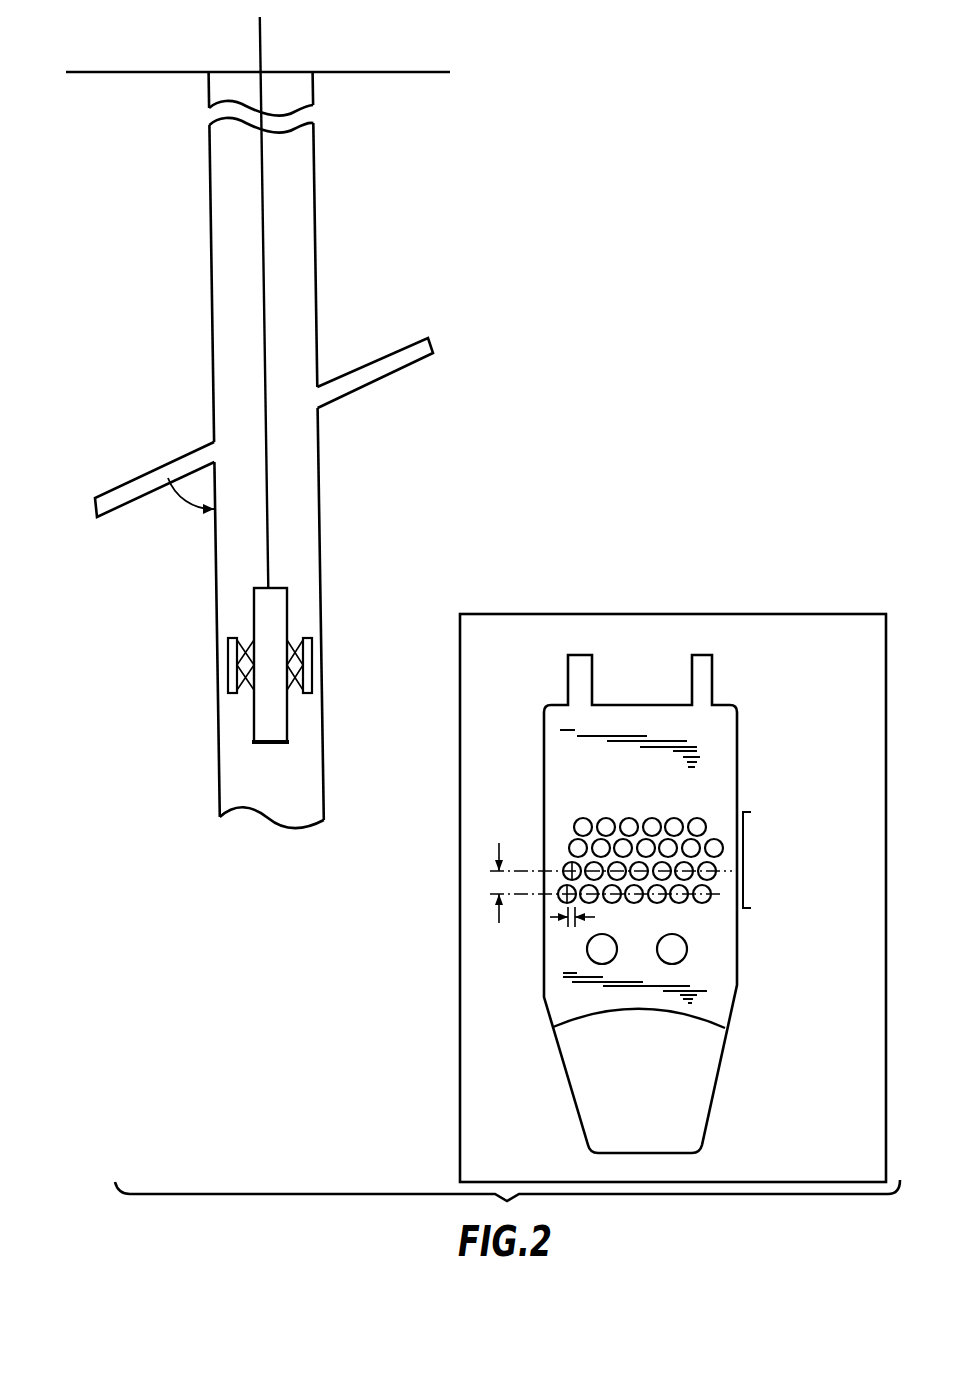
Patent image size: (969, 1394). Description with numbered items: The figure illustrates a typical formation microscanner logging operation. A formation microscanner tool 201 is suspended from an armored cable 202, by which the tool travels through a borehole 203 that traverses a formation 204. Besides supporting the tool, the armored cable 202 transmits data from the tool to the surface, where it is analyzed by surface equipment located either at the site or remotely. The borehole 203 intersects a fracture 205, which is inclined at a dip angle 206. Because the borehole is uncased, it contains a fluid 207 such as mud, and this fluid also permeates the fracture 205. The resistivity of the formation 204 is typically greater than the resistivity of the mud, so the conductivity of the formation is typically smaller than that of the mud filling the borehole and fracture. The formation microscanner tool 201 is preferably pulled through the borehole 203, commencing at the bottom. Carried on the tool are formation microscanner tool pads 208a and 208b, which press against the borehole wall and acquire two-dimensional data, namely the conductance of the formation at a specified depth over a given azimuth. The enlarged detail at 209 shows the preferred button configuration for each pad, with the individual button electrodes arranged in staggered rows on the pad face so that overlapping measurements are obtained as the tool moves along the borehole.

The formation microscanner tool 201 is at (280, 617).
The armored cable 202 is at (263, 50).
The borehole 203 is at (300, 198).
The formation 204 is at (167, 184).
The fracture 205 is at (183, 463).
The dip angle 206 is at (186, 506).
The fluid 207 is at (285, 322).
The formation microscanner tool pad 208a is at (227, 673).
The formation microscanner tool pad 208b is at (307, 675).
The button configuration 209 is at (461, 967).